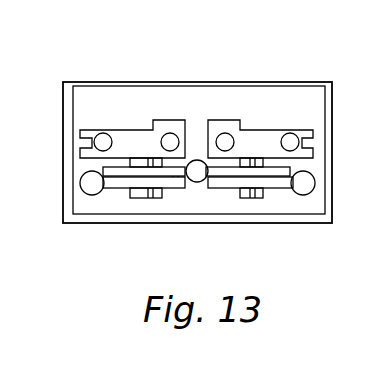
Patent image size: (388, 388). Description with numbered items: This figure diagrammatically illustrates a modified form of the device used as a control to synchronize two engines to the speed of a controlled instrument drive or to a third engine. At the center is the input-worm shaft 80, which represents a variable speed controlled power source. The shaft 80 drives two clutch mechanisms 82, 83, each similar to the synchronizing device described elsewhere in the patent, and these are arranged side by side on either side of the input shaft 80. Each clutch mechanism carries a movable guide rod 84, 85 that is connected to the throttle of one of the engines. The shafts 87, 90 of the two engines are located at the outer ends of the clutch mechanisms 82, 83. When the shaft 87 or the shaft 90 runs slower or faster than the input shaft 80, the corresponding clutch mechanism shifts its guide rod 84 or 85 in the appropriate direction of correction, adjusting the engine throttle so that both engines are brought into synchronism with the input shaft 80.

The input-worm shaft 80 is at (197, 160).
The clutch mechanism 82 is at (117, 197).
The clutch mechanism 83 is at (277, 197).
The movable guide rod 84 is at (108, 136).
The movable guide rod 85 is at (293, 134).
The shaft 87 is at (80, 182).
The shaft 90 is at (315, 182).